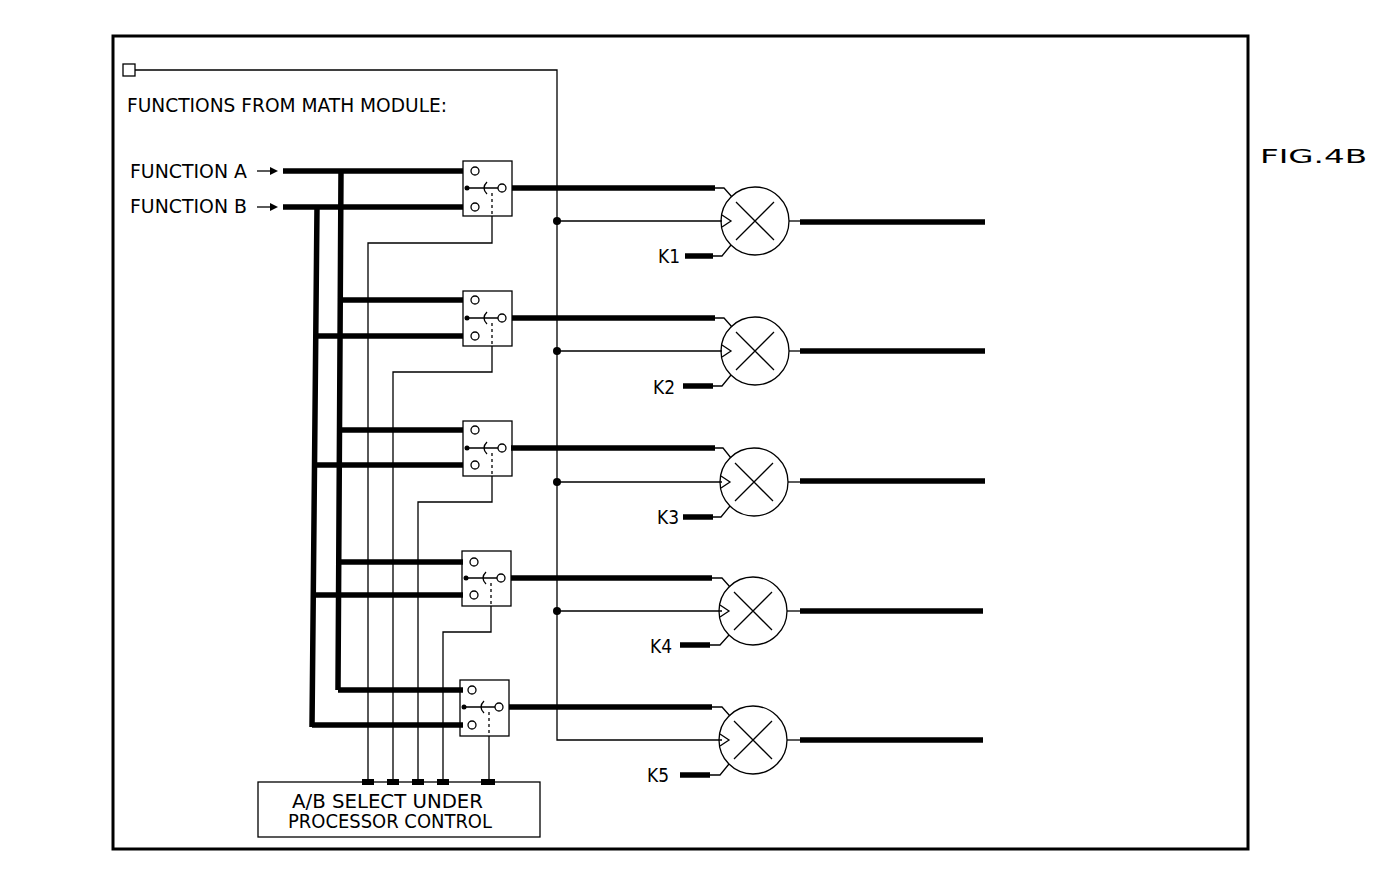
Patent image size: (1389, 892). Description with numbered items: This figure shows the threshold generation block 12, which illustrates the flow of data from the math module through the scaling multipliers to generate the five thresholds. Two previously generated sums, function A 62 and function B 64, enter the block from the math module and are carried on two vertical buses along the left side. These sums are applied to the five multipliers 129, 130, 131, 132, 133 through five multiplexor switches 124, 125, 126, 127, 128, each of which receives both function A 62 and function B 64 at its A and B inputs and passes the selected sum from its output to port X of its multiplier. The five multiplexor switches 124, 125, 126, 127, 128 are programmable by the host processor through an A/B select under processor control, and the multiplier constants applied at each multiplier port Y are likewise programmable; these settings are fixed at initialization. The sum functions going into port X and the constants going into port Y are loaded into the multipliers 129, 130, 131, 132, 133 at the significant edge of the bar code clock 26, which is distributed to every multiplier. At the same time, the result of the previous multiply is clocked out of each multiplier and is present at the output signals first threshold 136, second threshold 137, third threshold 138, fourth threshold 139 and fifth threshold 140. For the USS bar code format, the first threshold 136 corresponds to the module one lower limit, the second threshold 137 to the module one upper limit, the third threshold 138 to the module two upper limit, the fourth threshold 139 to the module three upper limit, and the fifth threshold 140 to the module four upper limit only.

The threshold generation block 12 is at (1250, 84).
The bar code clock 26 is at (540, 68).
The function A 62 is at (330, 168).
The function B 64 is at (313, 303).
The multiplexor switch 124 is at (492, 158).
The multiplexor switch 125 is at (500, 291).
The multiplexor switch 126 is at (496, 421).
The multiplexor switch 127 is at (494, 551).
The multiplexor switch 128 is at (496, 680).
The multiplier 129 is at (772, 188).
The multiplier 130 is at (778, 318).
The multiplier 131 is at (769, 451).
The multiplier 132 is at (767, 580).
The multiplier 133 is at (768, 710).
The threshold 1 136 is at (985, 222).
The threshold 2 137 is at (985, 351).
The threshold 3 138 is at (985, 481).
The threshold 4 139 is at (983, 611).
The threshold 5 140 is at (983, 740).